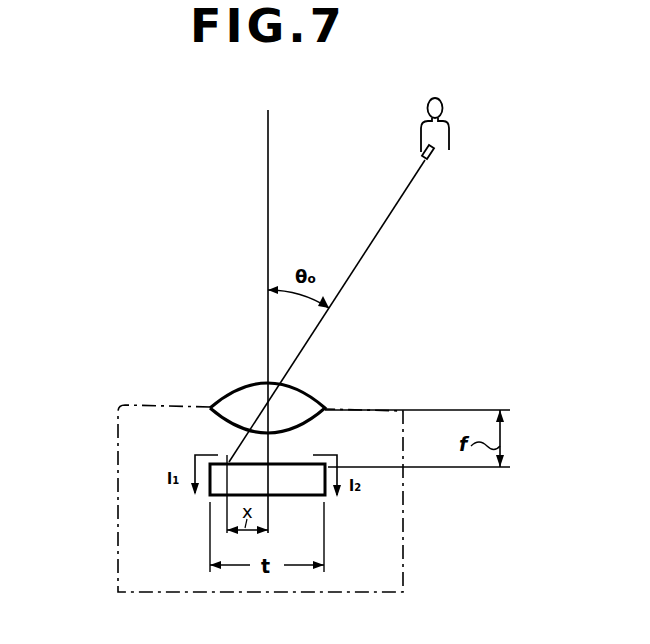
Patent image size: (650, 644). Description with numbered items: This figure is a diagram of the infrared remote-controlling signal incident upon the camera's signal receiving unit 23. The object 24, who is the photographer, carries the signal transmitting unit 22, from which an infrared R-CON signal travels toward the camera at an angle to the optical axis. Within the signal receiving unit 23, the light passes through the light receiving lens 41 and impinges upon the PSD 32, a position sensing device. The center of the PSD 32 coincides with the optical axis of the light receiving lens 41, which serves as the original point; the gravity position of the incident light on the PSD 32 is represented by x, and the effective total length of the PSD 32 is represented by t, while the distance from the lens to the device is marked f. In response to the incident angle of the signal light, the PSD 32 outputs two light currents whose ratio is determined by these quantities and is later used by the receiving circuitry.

The signal transmitting unit 22 is at (420, 157).
The signal receiving unit 23 is at (116, 477).
The object 24 is at (449, 140).
The PSD (position sensing device) 32 is at (298, 472).
The light receiving lens 41 is at (232, 396).